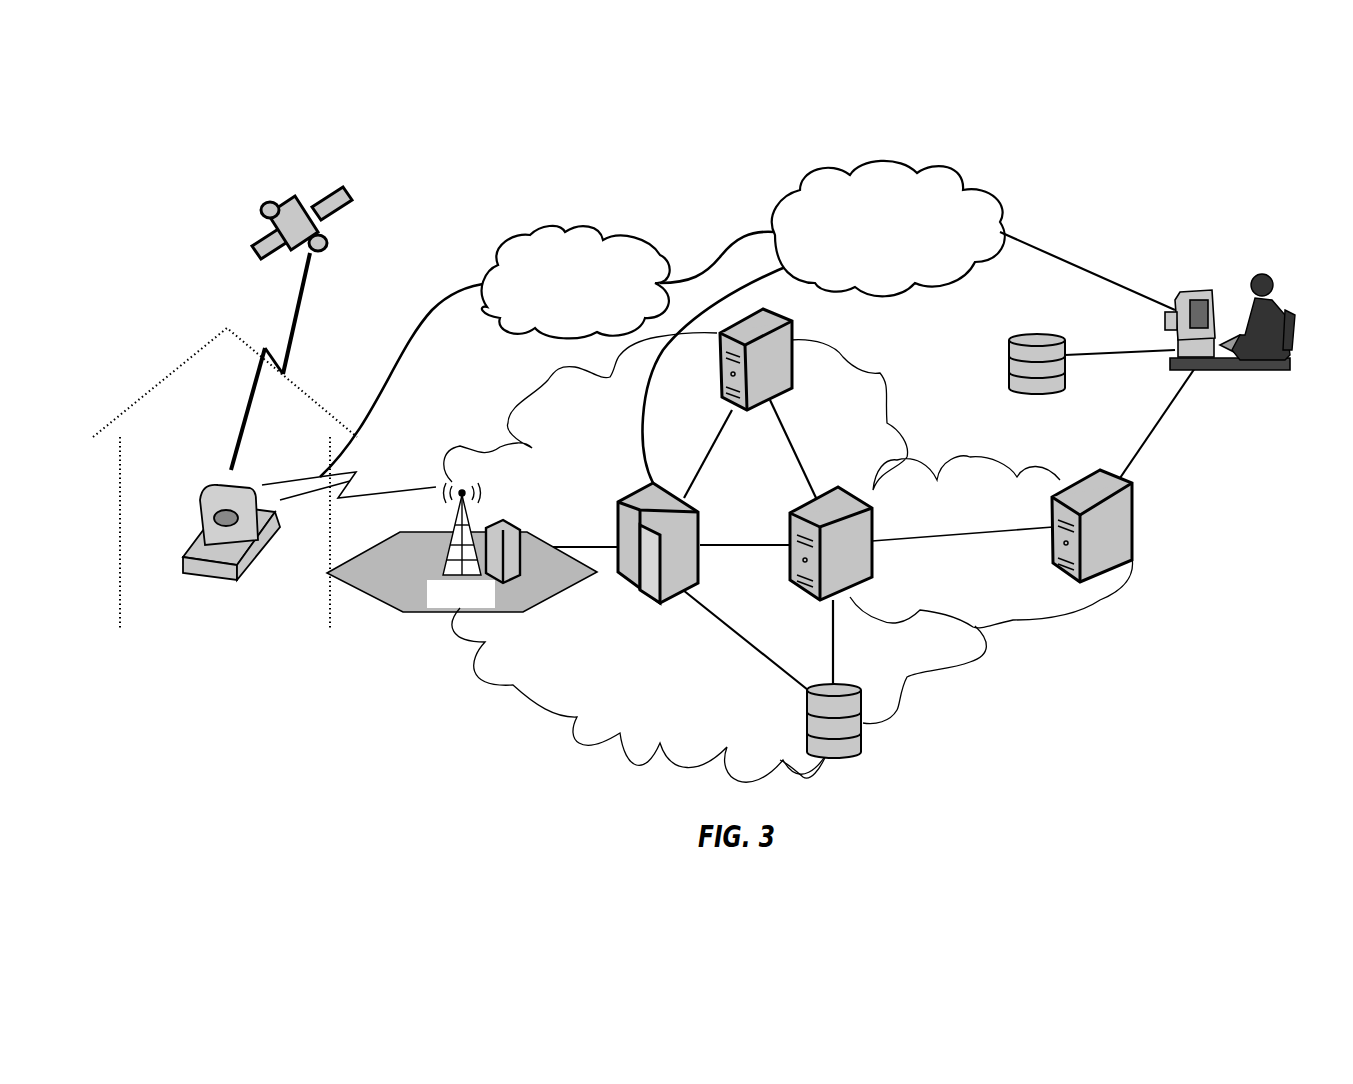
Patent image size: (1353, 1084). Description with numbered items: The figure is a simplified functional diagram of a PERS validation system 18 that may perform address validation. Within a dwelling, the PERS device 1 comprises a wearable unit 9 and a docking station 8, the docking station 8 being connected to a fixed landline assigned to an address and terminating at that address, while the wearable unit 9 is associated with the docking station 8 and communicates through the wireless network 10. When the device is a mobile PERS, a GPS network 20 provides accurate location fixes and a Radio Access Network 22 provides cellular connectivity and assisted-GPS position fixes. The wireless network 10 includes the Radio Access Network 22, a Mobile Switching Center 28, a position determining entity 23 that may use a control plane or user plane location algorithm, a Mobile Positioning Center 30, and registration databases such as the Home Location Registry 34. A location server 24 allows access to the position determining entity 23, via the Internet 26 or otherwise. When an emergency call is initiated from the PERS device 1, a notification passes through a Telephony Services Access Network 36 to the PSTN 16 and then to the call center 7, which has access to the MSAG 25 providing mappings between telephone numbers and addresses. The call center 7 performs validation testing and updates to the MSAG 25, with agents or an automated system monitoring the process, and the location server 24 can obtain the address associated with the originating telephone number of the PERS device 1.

The PERS device 1 is at (285, 544).
The call center 7 is at (1244, 322).
The docking station 8 is at (245, 563).
The wearable unit 9 is at (215, 505).
The wireless network 10 is at (945, 680).
The PSTN 16 is at (888, 228).
The PERS validation system 18 is at (166, 315).
The GPS network 20 is at (315, 328).
The Radio Access Network 22 is at (462, 547).
The position determining entity 23 is at (730, 359).
The location server 24 is at (1115, 526).
The MSAG 25 is at (1037, 381).
The Internet 26 is at (962, 543).
The Mobile Switching Center 28 is at (651, 557).
The Mobile Positioning Center 30 is at (828, 557).
The Home Location Registry 34 is at (862, 721).
The Telephony Services Access Network 36 is at (576, 282).